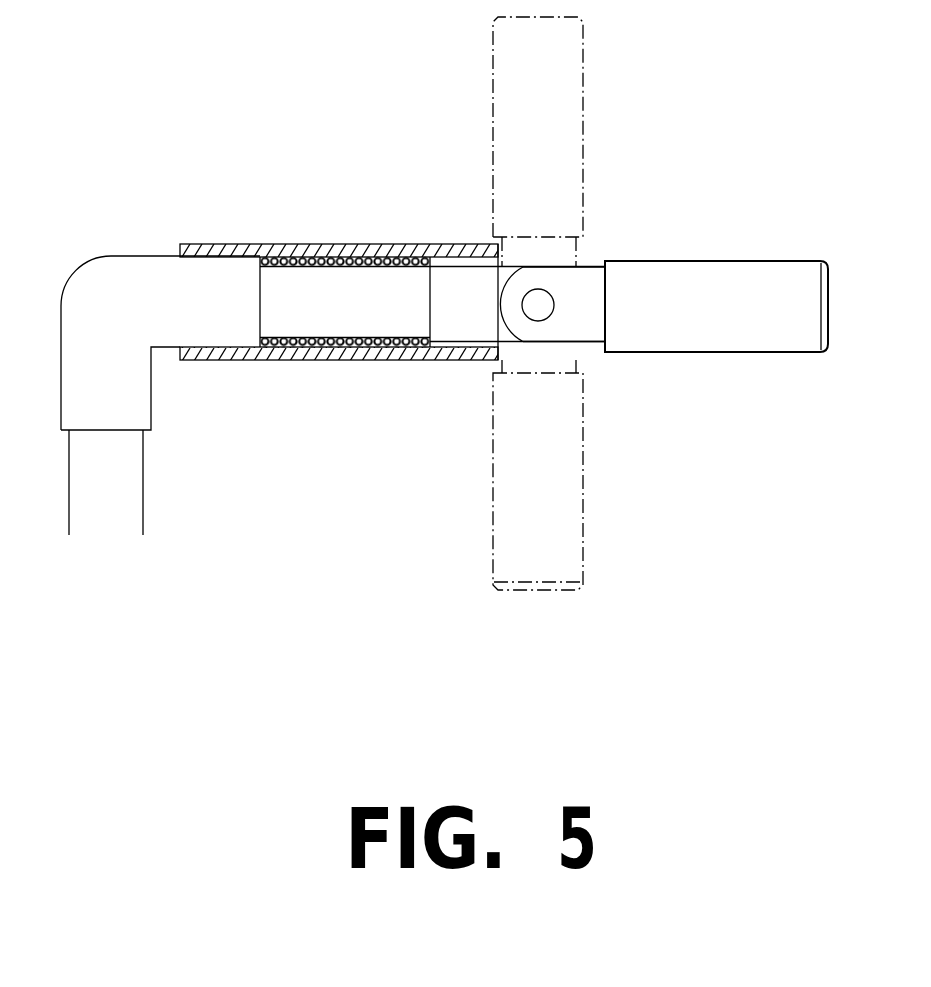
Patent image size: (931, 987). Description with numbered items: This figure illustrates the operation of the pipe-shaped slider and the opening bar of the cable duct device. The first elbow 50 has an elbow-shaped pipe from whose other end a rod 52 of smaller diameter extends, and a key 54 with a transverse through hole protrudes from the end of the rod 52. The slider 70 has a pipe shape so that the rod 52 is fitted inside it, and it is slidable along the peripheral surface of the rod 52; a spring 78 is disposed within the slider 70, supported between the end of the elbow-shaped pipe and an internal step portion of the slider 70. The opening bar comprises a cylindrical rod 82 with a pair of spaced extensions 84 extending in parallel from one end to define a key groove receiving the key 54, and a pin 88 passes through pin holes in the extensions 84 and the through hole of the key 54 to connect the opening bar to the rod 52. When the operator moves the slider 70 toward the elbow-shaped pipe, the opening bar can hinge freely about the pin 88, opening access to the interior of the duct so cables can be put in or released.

The first elbow 50 is at (122, 277).
The slider 70 is at (232, 247).
The spring 78 is at (300, 257).
The rod 52 is at (382, 287).
The key 54 is at (458, 313).
The spaced extensions 84 is at (583, 288).
The pin 88 is at (542, 310).
The cylindrical rod 82 is at (762, 280).